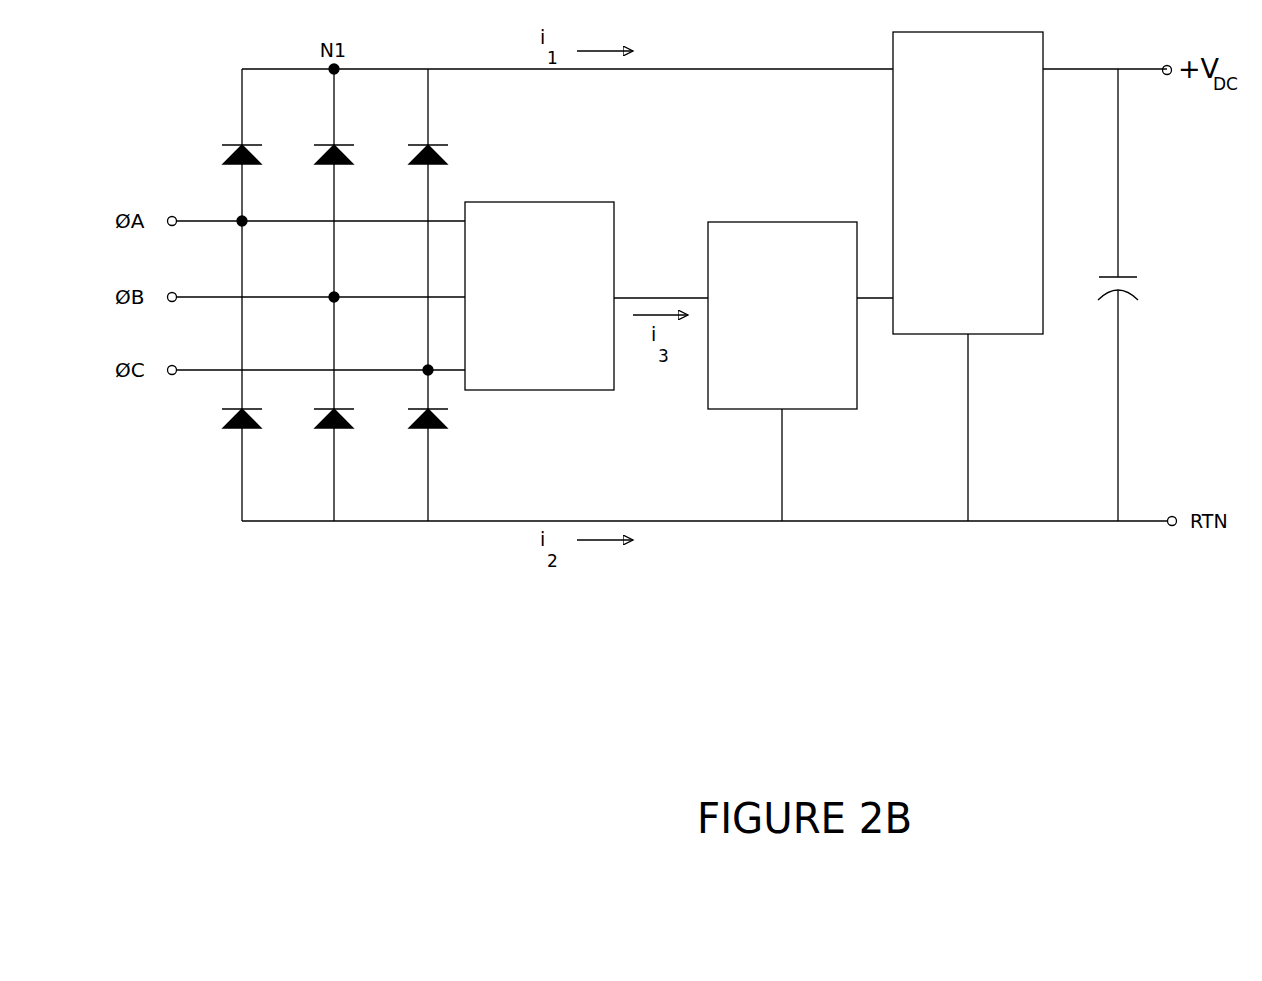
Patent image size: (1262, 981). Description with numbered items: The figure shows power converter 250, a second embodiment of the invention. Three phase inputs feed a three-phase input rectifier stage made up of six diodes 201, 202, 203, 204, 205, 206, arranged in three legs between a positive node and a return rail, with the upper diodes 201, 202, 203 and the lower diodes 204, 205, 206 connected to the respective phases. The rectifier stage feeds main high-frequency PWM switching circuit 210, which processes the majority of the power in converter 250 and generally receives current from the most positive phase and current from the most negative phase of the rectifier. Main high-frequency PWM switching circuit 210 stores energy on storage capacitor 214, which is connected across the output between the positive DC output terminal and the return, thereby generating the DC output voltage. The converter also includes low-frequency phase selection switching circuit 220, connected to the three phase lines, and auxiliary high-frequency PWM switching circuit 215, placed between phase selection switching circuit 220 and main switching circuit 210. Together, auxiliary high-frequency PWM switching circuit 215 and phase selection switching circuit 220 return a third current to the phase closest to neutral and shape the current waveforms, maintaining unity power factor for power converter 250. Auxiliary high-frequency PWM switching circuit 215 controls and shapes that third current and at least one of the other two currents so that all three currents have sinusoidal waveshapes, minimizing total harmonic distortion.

The diode 201 is at (264, 166).
The diode 202 is at (356, 166).
The diode 203 is at (410, 143).
The diode 204 is at (264, 430).
The diode 205 is at (356, 430).
The diode 206 is at (410, 408).
The main high-frequency PWM switching circuit 210 is at (891, 146).
The storage capacitor 214 is at (1140, 277).
The auxiliary high-frequency PWM switching circuit 215 is at (743, 221).
The low-frequency phase selection switching circuit 220 is at (557, 201).
The power converter 250 is at (408, 615).